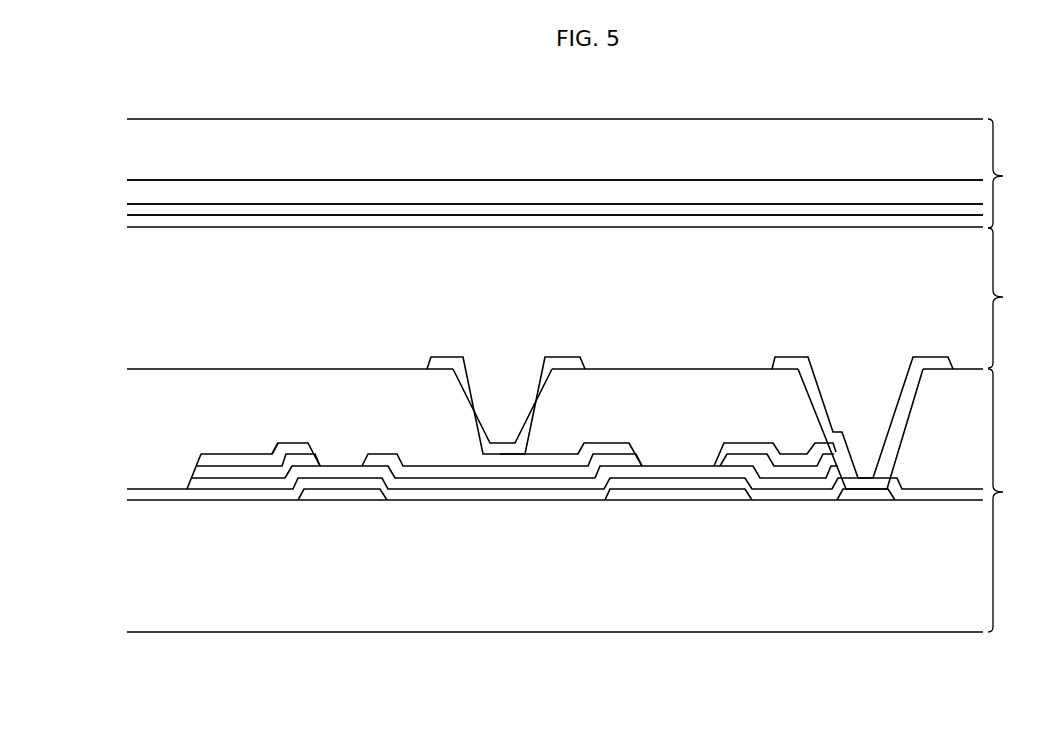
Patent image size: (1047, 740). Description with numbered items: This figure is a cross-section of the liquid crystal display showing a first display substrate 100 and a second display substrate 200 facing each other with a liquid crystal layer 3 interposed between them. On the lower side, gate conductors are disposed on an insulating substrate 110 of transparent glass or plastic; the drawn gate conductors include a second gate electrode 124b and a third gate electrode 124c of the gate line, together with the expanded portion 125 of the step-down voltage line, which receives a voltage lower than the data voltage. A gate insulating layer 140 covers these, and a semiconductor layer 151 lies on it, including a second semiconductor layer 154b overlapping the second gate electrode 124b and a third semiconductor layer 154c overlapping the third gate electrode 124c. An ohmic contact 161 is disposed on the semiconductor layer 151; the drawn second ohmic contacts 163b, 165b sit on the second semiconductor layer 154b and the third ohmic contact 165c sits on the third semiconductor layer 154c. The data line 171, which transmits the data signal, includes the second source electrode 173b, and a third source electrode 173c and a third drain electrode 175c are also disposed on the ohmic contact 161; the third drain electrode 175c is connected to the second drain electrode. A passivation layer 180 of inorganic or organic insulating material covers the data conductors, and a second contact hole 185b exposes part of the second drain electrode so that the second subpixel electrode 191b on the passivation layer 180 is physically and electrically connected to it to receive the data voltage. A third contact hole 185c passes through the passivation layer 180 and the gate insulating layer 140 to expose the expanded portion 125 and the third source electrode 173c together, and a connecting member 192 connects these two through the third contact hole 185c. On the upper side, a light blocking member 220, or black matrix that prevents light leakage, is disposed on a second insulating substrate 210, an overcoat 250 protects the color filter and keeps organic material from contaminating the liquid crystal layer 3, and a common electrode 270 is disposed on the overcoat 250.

The liquid crystal layer 3 is at (1004, 298).
The first display substrate 100 is at (1013, 500).
The insulating substrate 110 is at (933, 620).
The second gate electrode 124b is at (337, 496).
The third gate electrode 124c is at (633, 496).
The expanded portion 125 is at (872, 490).
The gate insulating layer 140 is at (437, 492).
The semiconductor layer 151 is at (183, 488).
The ohmic contact 161 is at (193, 468).
The data line 171 is at (215, 460).
The second semiconductor layer 154b is at (358, 468).
The third semiconductor layer 154c is at (681, 474).
The second ohmic contact 163b is at (289, 457).
The second ohmic contact 165b is at (555, 494).
The third ohmic contact 165c is at (613, 460).
The second source electrode 173b is at (311, 446).
The third source electrode 173c is at (735, 446).
The third drain electrode 175c is at (632, 446).
The passivation layer 180 is at (553, 446).
The second contact hole 185b is at (540, 395).
The third contact hole 185c is at (906, 393).
The second subpixel electrode 191b is at (476, 378).
The connecting member 192 is at (792, 357).
The second display substrate 200 is at (1013, 173).
The second insulating substrate 210 is at (775, 132).
The light blocking member 220 is at (695, 192).
The overcoat 250 is at (625, 212).
The common electrode 270 is at (548, 225).